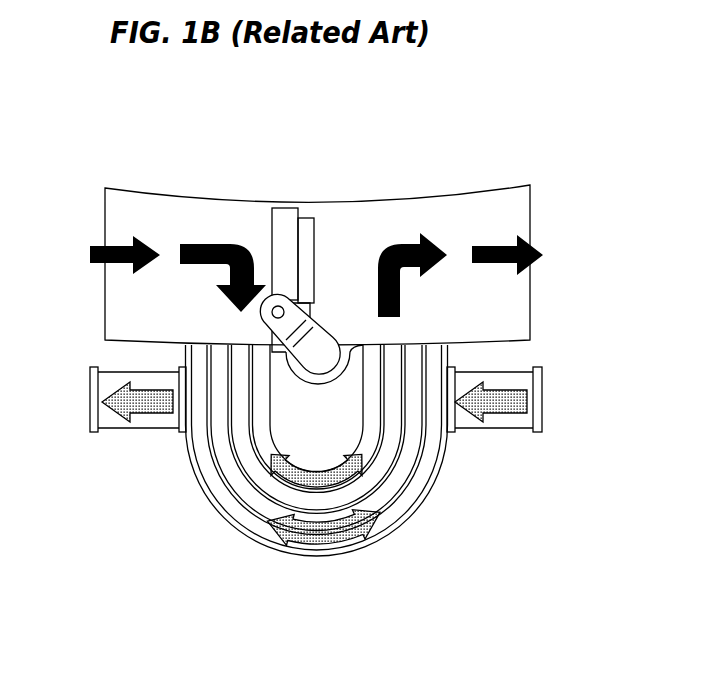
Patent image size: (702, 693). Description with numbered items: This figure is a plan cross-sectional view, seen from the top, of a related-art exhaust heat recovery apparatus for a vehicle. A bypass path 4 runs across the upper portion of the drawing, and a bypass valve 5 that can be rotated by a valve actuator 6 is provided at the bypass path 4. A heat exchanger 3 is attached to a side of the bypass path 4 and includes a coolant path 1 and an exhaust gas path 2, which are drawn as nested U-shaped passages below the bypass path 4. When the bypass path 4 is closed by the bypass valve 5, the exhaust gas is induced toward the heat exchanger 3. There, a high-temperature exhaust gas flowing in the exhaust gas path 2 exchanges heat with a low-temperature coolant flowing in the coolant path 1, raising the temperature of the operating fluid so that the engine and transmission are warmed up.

The coolant path 1 is at (196, 472).
The exhaust gas path 2 is at (225, 495).
The heat exchanger 3 is at (131, 502).
The bypass path 4 is at (445, 220).
The bypass valve 5 is at (283, 242).
The valve actuator 6 is at (322, 345).